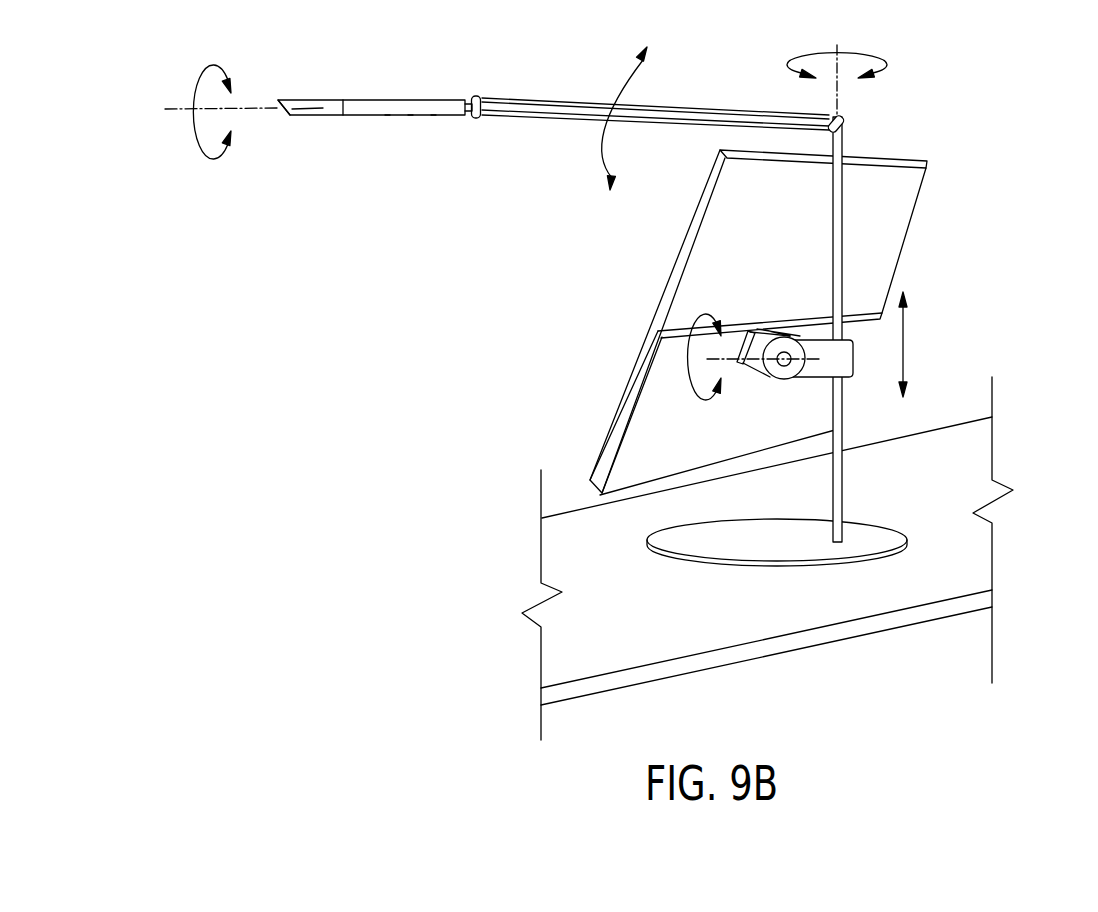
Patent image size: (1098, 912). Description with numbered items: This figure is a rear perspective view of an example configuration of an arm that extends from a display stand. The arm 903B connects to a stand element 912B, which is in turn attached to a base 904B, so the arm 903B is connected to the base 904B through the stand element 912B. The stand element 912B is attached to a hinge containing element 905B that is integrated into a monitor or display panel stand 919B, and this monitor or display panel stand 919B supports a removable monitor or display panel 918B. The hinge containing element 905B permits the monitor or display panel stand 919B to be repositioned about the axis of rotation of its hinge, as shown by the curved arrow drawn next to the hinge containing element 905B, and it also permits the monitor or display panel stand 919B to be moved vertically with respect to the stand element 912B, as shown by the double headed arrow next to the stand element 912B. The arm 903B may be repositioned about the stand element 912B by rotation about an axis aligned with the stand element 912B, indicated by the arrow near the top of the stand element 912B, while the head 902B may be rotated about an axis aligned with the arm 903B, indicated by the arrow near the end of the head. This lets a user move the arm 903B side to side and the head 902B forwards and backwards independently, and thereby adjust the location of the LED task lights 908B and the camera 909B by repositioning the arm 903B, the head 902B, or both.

The head 902B is at (397, 96).
The arm 903B is at (578, 100).
The base 904B is at (878, 534).
The hinge containing element 905B is at (773, 369).
The LED task lights 908B is at (388, 115).
The camera 909B is at (318, 117).
The stand element 912B is at (838, 227).
The monitor or display panel 918B is at (672, 264).
The monitor or display panel stand 919B is at (635, 375).